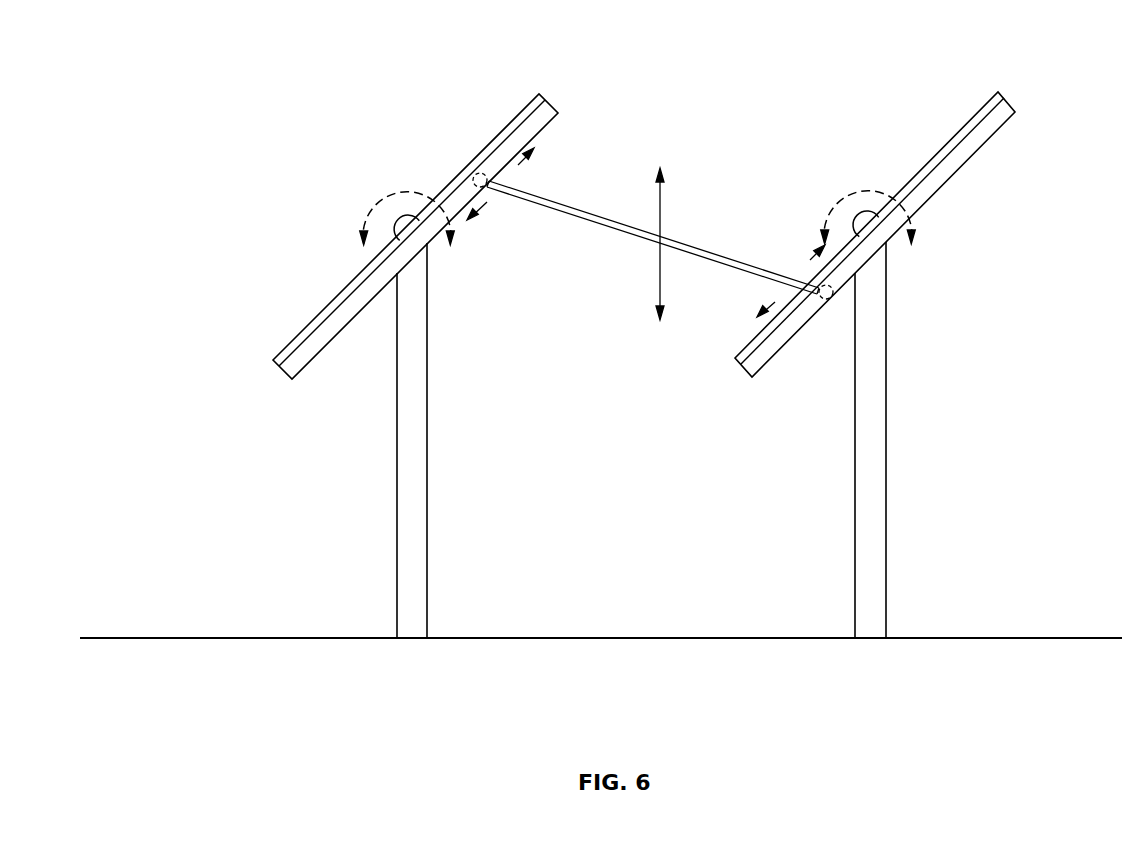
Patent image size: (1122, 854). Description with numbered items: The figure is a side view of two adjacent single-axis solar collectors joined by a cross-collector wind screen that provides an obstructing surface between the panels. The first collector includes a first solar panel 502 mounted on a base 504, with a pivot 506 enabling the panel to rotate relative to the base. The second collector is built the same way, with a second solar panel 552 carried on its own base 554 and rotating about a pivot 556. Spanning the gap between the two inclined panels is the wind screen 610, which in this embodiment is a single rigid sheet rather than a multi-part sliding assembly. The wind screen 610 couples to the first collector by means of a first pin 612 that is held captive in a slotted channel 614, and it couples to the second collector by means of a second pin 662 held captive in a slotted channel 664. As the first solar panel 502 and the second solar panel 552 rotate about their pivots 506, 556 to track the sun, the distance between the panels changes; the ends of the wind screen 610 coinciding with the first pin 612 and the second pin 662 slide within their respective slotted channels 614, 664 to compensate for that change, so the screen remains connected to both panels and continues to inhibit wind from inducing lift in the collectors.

The first solar panel 502 is at (341, 236).
The base 504 is at (397, 545).
The pivot 506 is at (398, 222).
The second solar panel 552 is at (920, 212).
The base 554 is at (855, 548).
The pivot 556 is at (868, 229).
The wind screen 610 is at (575, 208).
The first pin 612 is at (477, 175).
The slotted channel 614 is at (313, 352).
The second pin 662 is at (832, 294).
The slotted channel 664 is at (932, 190).